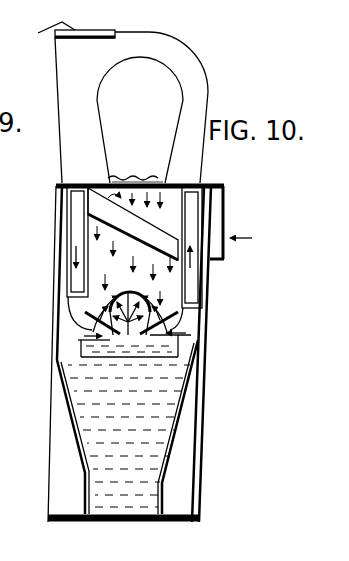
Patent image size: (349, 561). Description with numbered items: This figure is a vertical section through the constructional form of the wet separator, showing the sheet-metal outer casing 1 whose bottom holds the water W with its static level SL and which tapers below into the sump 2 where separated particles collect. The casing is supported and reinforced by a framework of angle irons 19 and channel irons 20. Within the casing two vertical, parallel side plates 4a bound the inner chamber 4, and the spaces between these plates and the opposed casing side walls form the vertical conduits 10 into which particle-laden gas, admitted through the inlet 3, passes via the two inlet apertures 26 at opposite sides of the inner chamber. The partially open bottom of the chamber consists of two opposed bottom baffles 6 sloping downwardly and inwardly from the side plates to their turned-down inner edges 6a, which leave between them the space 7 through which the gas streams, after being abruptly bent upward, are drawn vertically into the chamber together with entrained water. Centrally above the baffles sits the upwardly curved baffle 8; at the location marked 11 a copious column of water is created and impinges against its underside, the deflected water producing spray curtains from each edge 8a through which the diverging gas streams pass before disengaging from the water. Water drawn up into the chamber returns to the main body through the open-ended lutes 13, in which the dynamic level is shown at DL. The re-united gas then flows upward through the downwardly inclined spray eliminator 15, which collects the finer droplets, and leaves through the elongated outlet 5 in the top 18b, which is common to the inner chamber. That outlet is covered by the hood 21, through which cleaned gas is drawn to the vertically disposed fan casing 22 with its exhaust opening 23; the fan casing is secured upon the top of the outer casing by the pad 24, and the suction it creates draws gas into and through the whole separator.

The outer casing 1 is at (57, 318).
The sump 2 is at (87, 446).
The inlet 3 is at (218, 184).
The inner chamber 4 is at (188, 285).
The side plates 4a is at (185, 212).
The outlet 5 is at (160, 181).
The bottom baffles 6 is at (83, 322).
The inner edges 6a is at (150, 337).
The space 7 is at (122, 335).
The upwardly curved baffle 8 is at (110, 293).
The edge 8a is at (165, 310).
The vertical conduits 10 is at (58, 318).
The column of water 11 is at (155, 284).
The lutes 13 is at (81, 348).
The spray eliminator 15 is at (133, 230).
The top 18b is at (108, 182).
The angle irons 19 is at (48, 418).
The channel irons 20 is at (138, 520).
The hood 21 is at (163, 102).
The fan casing 22 is at (190, 76).
The exhaust opening 23 is at (43, 38).
The pad 24 is at (75, 178).
The inlet apertures 26 is at (72, 250).
The dynamic water level DL is at (130, 285).
The static water level SL is at (205, 348).
The water W is at (180, 383).